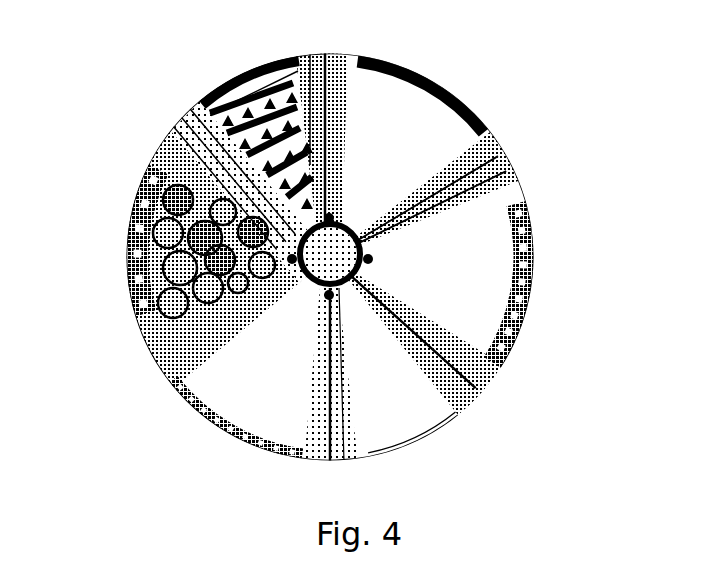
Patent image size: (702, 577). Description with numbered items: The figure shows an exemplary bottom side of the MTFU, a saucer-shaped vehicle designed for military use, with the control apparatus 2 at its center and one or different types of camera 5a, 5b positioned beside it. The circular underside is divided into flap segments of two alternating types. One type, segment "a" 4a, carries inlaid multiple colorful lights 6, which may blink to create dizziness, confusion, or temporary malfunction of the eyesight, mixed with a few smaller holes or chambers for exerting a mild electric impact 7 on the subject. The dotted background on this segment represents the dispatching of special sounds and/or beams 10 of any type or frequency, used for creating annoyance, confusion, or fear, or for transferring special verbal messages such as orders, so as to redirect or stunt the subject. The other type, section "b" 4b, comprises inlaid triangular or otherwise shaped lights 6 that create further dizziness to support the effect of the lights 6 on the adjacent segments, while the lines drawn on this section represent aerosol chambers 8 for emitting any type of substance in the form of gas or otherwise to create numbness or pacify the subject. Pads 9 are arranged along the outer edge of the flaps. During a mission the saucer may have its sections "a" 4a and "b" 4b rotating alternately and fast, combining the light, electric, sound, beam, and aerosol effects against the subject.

The control apparatus 2 is at (340, 245).
The segment "a" of flap 4a is at (130, 307).
The section "b" of flap 4b is at (410, 43).
The camera 5a is at (372, 268).
The camera 5b is at (329, 256).
The lights 6 is at (288, 97).
The mild electric impact 7 is at (106, 256).
The aerosol chambers 8 is at (293, 138).
The pads 9 is at (81, 179).
The special sounds and/or beams 10 is at (104, 287).